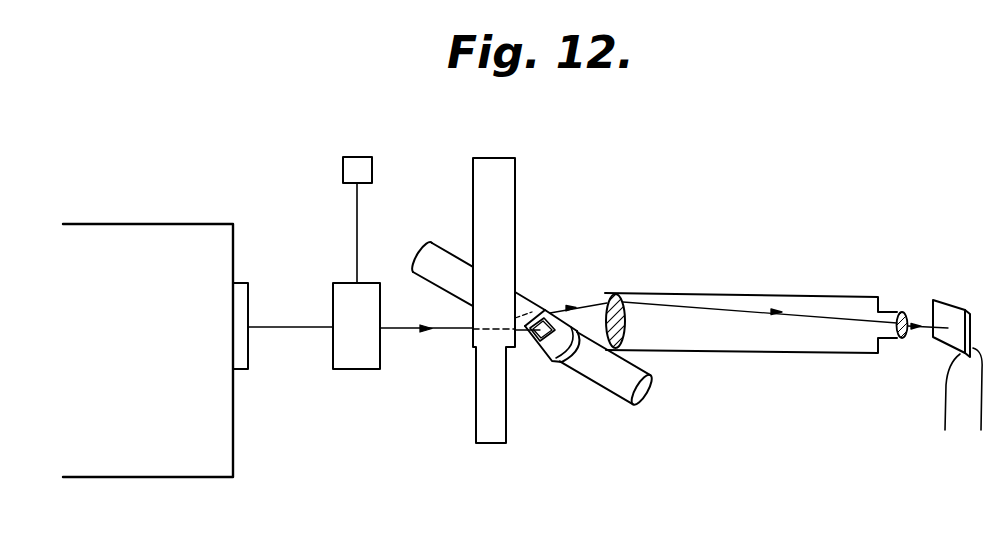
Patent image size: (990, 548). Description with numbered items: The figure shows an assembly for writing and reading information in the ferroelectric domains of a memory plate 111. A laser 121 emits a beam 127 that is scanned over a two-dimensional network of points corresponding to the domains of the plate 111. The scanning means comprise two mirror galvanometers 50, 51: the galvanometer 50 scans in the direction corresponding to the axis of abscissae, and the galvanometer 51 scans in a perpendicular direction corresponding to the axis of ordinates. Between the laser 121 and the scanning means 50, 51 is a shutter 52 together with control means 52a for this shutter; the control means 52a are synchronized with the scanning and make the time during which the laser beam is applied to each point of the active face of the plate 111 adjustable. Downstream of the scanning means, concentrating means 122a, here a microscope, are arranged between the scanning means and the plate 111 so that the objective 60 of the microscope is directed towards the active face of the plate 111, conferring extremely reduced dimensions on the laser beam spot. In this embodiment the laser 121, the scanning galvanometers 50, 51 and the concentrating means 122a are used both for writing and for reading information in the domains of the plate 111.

The laser 121 is at (157, 367).
The beam 127 is at (289, 324).
The shutter 52 is at (372, 344).
The control means 52a is at (358, 163).
The mirror galvanometer 50 is at (506, 167).
The mirror galvanometer 51 is at (530, 306).
The means for concentrating the spot 122a is at (708, 288).
The objective 60 is at (909, 334).
The plate 111 is at (965, 263).